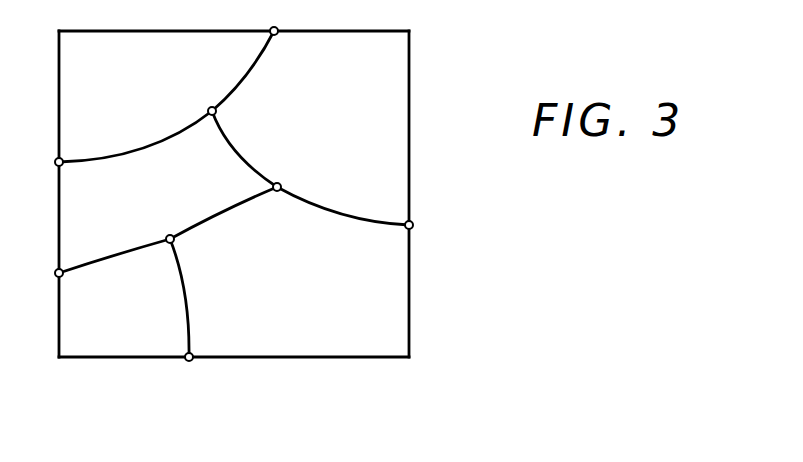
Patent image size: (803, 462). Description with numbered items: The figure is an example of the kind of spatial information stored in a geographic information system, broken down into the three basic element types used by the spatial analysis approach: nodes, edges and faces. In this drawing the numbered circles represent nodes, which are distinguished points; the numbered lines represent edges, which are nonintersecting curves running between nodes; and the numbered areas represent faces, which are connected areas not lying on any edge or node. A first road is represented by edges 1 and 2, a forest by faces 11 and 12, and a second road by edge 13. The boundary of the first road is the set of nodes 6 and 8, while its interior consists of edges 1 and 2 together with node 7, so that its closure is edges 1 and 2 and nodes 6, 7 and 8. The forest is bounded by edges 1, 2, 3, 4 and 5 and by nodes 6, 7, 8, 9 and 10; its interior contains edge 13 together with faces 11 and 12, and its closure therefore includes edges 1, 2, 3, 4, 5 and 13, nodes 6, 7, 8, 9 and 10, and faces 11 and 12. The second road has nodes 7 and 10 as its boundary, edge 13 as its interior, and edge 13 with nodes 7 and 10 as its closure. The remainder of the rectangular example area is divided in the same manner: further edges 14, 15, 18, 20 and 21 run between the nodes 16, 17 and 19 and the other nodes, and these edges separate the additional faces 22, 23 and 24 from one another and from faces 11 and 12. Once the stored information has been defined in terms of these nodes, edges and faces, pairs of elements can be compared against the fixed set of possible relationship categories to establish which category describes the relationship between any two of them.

The edge 1 is at (114, 248).
The edge 2 is at (223, 209).
The edge 3 is at (343, 202).
The edge 4 is at (421, 291).
The edge 5 is at (124, 373).
The node 6 is at (48, 273).
The node 7 is at (167, 221).
The node 8 is at (286, 172).
The node 9 is at (421, 225).
The node 10 is at (190, 373).
The face 11 is at (124, 298).
The face 12 is at (289, 272).
The edge 13 is at (168, 298).
The curve segment 14 is at (244, 149).
The curve segment 15 is at (243, 71).
The node point 16 is at (275, 17).
The node point 17 is at (196, 100).
The curve segment 18 is at (135, 136).
The node point 19 is at (38, 162).
The boundary edge 20 is at (166, 15).
The boundary edge 21 is at (341, 15).
The region 22 is at (166, 96).
The region 23 is at (310, 128).
The region 24 is at (168, 192).